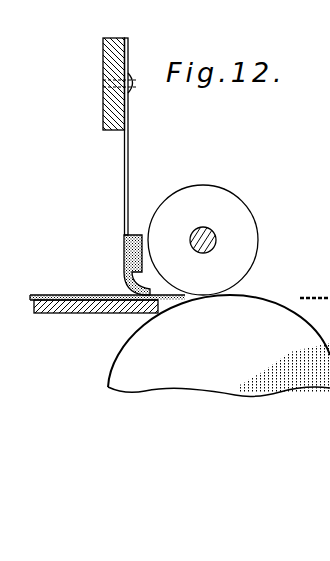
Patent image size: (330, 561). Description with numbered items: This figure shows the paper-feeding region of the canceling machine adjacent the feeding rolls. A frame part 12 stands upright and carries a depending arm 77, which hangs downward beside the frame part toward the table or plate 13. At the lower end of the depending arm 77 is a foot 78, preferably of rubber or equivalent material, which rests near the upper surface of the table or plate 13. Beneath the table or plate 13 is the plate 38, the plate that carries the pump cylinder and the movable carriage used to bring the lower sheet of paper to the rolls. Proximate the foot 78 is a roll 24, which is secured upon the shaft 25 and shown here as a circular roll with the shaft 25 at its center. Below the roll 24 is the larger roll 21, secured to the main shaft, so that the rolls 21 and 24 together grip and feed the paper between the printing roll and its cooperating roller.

The frame part 12 is at (104, 125).
The depending arms 77 is at (128, 172).
The feet 78 is at (128, 290).
The table or plate 13 is at (43, 295).
The plate 38 is at (90, 313).
The roll 24 is at (219, 200).
The shaft 25 is at (212, 235).
The roll 21 is at (259, 312).